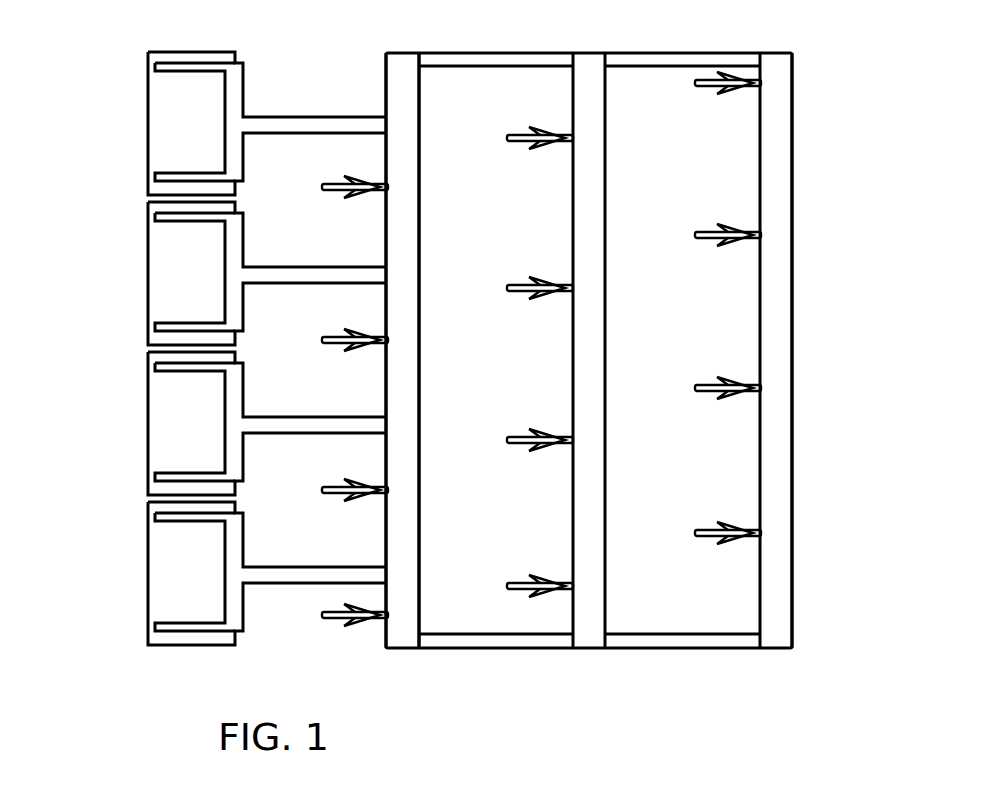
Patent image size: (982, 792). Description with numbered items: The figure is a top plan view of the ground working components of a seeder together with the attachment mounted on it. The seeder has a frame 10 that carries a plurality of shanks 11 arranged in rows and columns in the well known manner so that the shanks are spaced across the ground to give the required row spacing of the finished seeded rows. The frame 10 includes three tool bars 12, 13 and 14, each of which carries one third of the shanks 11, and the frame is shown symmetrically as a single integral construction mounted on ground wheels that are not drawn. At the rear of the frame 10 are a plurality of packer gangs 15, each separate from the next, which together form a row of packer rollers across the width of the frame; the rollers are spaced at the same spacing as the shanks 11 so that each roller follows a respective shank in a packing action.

The frame 10 is at (611, 346).
The shanks 11 is at (737, 82).
The tool bar 12 is at (775, 488).
The tool bar 13 is at (587, 613).
The tool bar 14 is at (402, 592).
The packer gangs 15 is at (146, 120).